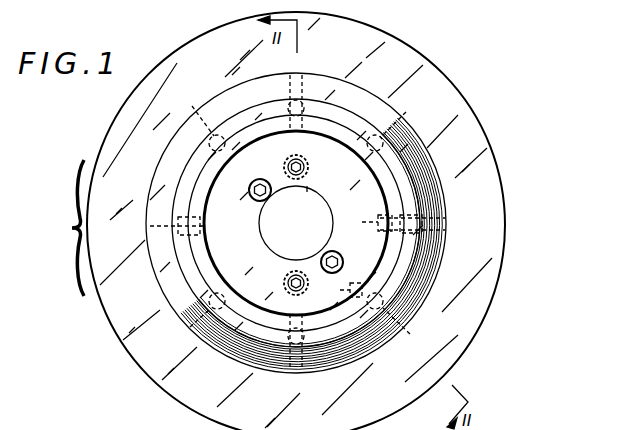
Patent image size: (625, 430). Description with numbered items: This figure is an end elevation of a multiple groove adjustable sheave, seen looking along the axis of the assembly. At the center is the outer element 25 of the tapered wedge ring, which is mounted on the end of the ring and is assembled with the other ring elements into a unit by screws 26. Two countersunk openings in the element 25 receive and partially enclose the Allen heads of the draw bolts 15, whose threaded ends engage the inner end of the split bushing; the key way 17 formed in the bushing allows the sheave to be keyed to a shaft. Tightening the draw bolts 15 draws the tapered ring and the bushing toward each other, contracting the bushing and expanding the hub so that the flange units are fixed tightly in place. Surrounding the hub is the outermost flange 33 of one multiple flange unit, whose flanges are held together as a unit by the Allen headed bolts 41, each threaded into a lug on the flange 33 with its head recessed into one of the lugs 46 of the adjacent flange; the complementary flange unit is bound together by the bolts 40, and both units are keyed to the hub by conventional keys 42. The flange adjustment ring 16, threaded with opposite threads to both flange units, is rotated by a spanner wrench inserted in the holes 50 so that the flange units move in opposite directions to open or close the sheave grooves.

The draw bolts 15 is at (300, 160).
The flange adjustment ring 16 is at (200, 183).
The key way 17 is at (64, 228).
The element of tapered ring 25 is at (321, 250).
The screws 26 is at (256, 196).
The flange 33 is at (484, 305).
The Allen headed bolts 40 is at (300, 75).
The Allen headed bolts 41 is at (288, 221).
The keys 42 is at (354, 257).
The lugs 46 is at (306, 182).
The holes 50 is at (284, 106).